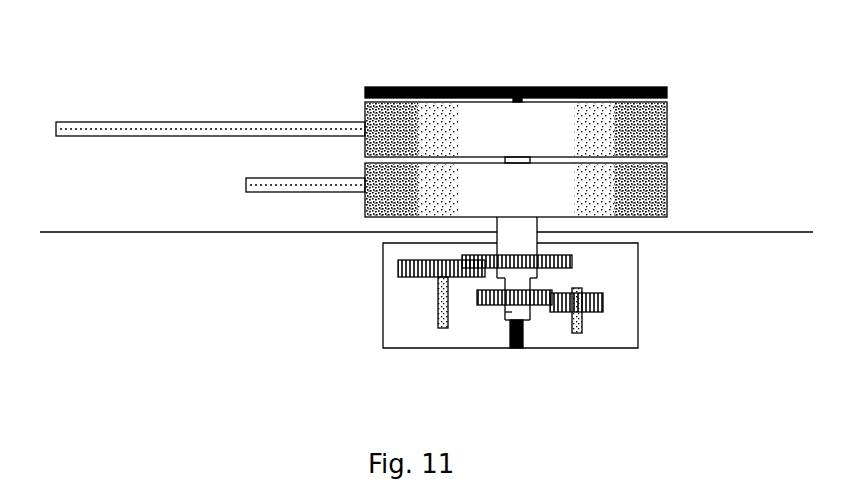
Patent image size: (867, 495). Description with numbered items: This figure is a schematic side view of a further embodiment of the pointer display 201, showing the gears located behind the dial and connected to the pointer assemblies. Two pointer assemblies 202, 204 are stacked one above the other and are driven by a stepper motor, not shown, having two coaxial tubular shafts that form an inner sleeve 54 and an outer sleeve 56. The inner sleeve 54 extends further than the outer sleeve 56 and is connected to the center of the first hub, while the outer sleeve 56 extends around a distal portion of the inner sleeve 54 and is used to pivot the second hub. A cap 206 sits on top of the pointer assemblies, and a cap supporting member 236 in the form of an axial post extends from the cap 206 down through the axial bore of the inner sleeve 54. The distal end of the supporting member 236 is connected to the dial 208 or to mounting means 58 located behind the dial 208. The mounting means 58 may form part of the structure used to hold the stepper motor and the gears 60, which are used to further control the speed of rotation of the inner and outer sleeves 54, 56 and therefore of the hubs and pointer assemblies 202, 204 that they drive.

The pointer display 201 is at (225, 355).
The pointer assembly 202 is at (674, 129).
The pointer assembly 204 is at (671, 193).
The cap 206 is at (613, 87).
The dial 208 is at (220, 232).
The outer sleeve 56 is at (523, 242).
The gears 60 is at (398, 277).
The inner sleeve 54 is at (505, 313).
The cap supporting member 236 is at (508, 348).
The mounting means 58 is at (573, 348).